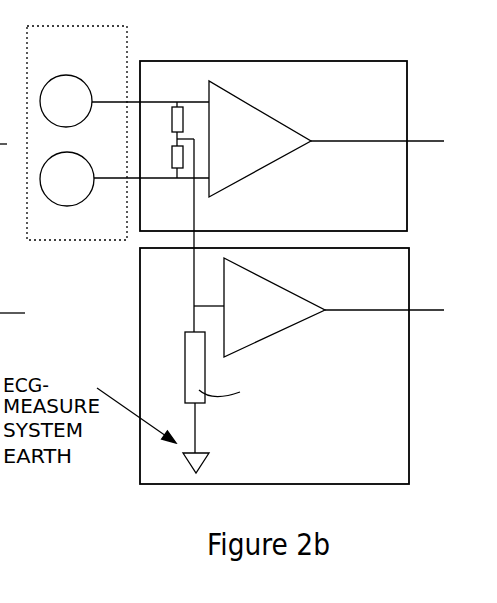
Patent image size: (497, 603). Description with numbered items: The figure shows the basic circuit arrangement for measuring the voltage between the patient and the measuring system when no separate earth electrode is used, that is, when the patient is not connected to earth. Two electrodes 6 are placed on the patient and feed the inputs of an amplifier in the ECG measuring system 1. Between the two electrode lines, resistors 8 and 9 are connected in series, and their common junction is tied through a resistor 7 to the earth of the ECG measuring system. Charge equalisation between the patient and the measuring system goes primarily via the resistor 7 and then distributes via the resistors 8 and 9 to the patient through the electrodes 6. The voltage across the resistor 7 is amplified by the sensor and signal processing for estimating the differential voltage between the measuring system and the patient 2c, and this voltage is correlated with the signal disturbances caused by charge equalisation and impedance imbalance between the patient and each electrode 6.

The ECG measuring system 1 is at (292, 146).
The sensor and signal processing for estimating the differential voltage between the 2c is at (334, 307).
The electrodes 6 is at (77, 133).
The resistor 7 is at (233, 402).
The resistor 8 is at (165, 124).
The resistor 9 is at (165, 161).